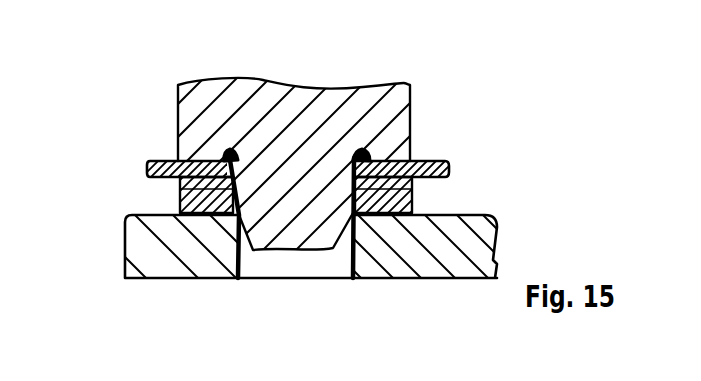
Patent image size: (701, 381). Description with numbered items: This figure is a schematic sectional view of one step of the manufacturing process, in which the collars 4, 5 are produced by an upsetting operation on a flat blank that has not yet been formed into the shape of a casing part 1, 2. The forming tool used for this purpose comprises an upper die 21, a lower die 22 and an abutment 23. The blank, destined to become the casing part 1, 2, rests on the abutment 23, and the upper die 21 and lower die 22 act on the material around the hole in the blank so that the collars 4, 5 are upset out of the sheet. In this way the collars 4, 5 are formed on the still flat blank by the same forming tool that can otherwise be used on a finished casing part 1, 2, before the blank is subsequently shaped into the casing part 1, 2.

The casing part 1 is at (276, 153).
The casing part 2 is at (150, 160).
The collar 4 is at (364, 158).
The collar 5 is at (412, 198).
The upper die 21 is at (410, 86).
The lower die 22 is at (179, 200).
The abutment 23 is at (188, 268).